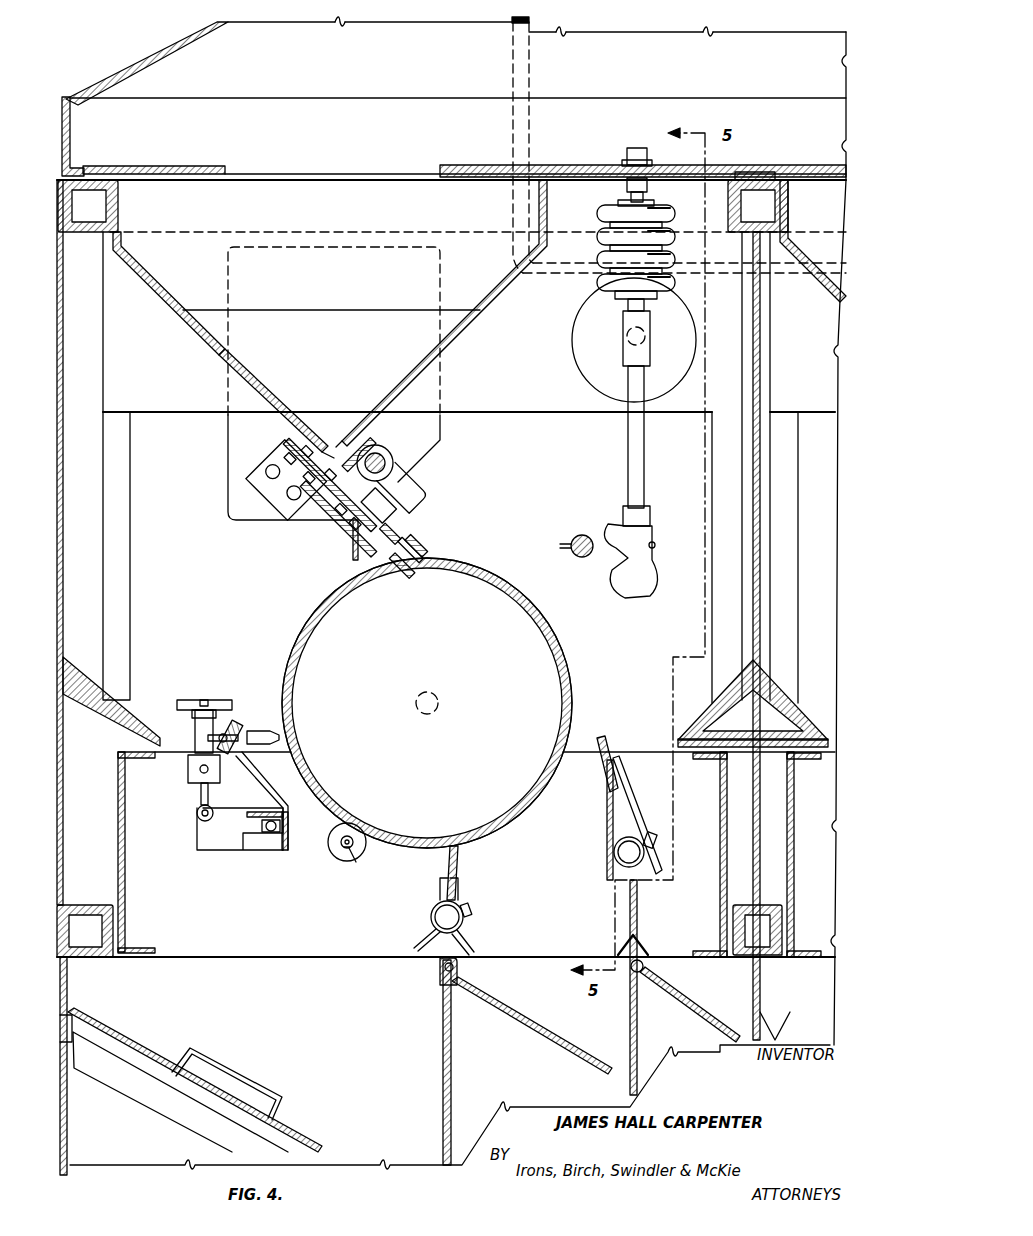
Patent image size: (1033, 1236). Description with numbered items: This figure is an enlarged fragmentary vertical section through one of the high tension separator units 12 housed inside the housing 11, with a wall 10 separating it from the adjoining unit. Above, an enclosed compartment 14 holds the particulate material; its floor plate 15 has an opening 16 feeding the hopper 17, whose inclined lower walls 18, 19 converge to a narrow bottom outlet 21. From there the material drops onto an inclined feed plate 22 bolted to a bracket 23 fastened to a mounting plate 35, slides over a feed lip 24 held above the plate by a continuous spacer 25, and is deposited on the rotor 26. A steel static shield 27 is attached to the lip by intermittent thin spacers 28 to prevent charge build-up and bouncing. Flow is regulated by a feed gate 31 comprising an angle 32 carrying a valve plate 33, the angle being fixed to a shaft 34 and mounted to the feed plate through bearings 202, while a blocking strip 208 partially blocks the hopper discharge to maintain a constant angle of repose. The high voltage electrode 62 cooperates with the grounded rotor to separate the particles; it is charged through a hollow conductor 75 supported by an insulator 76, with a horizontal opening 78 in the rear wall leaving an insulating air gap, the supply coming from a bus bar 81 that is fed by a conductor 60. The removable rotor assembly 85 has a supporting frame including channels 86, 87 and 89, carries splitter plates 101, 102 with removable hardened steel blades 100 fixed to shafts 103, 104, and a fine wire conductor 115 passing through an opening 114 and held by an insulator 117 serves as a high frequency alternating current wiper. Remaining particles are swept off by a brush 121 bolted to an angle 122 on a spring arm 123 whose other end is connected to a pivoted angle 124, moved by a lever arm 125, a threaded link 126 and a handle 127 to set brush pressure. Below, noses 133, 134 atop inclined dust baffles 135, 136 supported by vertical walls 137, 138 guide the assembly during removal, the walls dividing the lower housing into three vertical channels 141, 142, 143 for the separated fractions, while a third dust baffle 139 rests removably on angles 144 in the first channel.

The wall 10 is at (766, 520).
The housing 11 is at (116, 70).
The high tension separator unit 12 is at (221, 607).
The compartment 14 is at (377, 69).
The floor plate 15 is at (546, 166).
The opening 16 is at (300, 173).
The feed hopper 17 is at (150, 278).
The inclined lower wall 18 is at (252, 378).
The inclined lower wall 19 is at (396, 388).
The bottom outlet 21 is at (330, 440).
The feed plate 22 is at (292, 445).
The bracket 23 is at (272, 462).
The feed lip 24 is at (405, 520).
The spacer 25 is at (382, 540).
The rotor 26 is at (318, 599).
The static shield 27 is at (445, 540).
The spacer 28 is at (430, 522).
The feed gate 31 is at (420, 469).
The angle 32 is at (402, 460).
The valve plate 33 is at (424, 495).
The shaft 34 is at (376, 446).
The mounting plate 35 is at (228, 494).
The conductor 60 is at (520, 24).
The high voltage electrode 62 is at (614, 512).
The hollow conductor 75 is at (626, 438).
The insulator 76 is at (602, 226).
The horizontal opening 78 is at (586, 372).
The bus bar 81 is at (830, 264).
The rotor assembly 85 is at (583, 701).
The channel 86 is at (124, 843).
The channel 87 is at (720, 824).
The channel 89 is at (315, 916).
The blade 100 is at (604, 752).
The splitter plate 101 is at (606, 810).
The splitter plate 102 is at (460, 894).
The shaft 103 is at (612, 855).
The shaft 104 is at (466, 924).
The opening 114 is at (332, 836).
The fine wire electrical conductor 115 is at (353, 862).
The insulator 117 is at (362, 852).
The brush 121 is at (264, 726).
The angle 122 is at (228, 728).
The spring arm 123 is at (256, 782).
The angle 124 is at (282, 852).
The lever arm 125 is at (228, 834).
The threaded link 126 is at (196, 798).
The handle 127 is at (185, 700).
The nose 133 is at (438, 964).
The nose 134 is at (643, 968).
The inclined dust baffle 135 is at (498, 1012).
The inclined dust baffle 136 is at (702, 1016).
The vertical wall 137 is at (443, 1026).
The vertical wall 138 is at (630, 1026).
The inclined dust baffle 139 is at (128, 1045).
The vertical channel 141 is at (255, 1028).
The vertical channel 142 is at (501, 1072).
The vertical channel 143 is at (659, 1035).
The angle 144 is at (150, 1100).
The bearing 202 is at (318, 500).
The blocking strip 208 is at (344, 442).